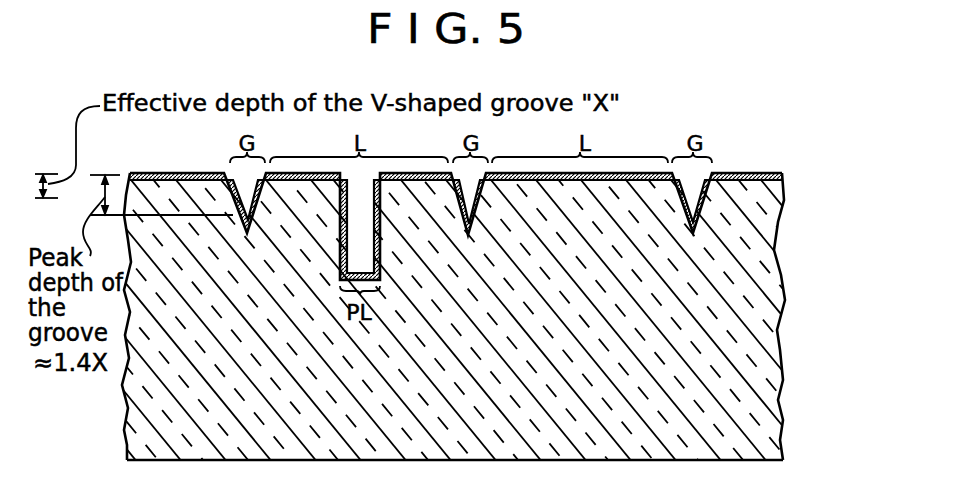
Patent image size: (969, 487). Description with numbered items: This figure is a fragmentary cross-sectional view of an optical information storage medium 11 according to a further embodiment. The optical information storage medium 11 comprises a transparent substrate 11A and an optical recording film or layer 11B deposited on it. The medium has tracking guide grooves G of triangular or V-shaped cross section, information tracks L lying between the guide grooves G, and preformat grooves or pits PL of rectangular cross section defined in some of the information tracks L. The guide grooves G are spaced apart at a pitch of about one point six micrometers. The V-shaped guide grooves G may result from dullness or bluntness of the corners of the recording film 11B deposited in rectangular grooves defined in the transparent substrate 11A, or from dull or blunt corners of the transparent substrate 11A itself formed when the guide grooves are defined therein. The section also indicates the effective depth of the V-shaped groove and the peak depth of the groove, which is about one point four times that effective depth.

The optical information storage medium 11 is at (803, 188).
The transparent substrate 11A is at (760, 342).
The optical recording film 11B is at (743, 177).